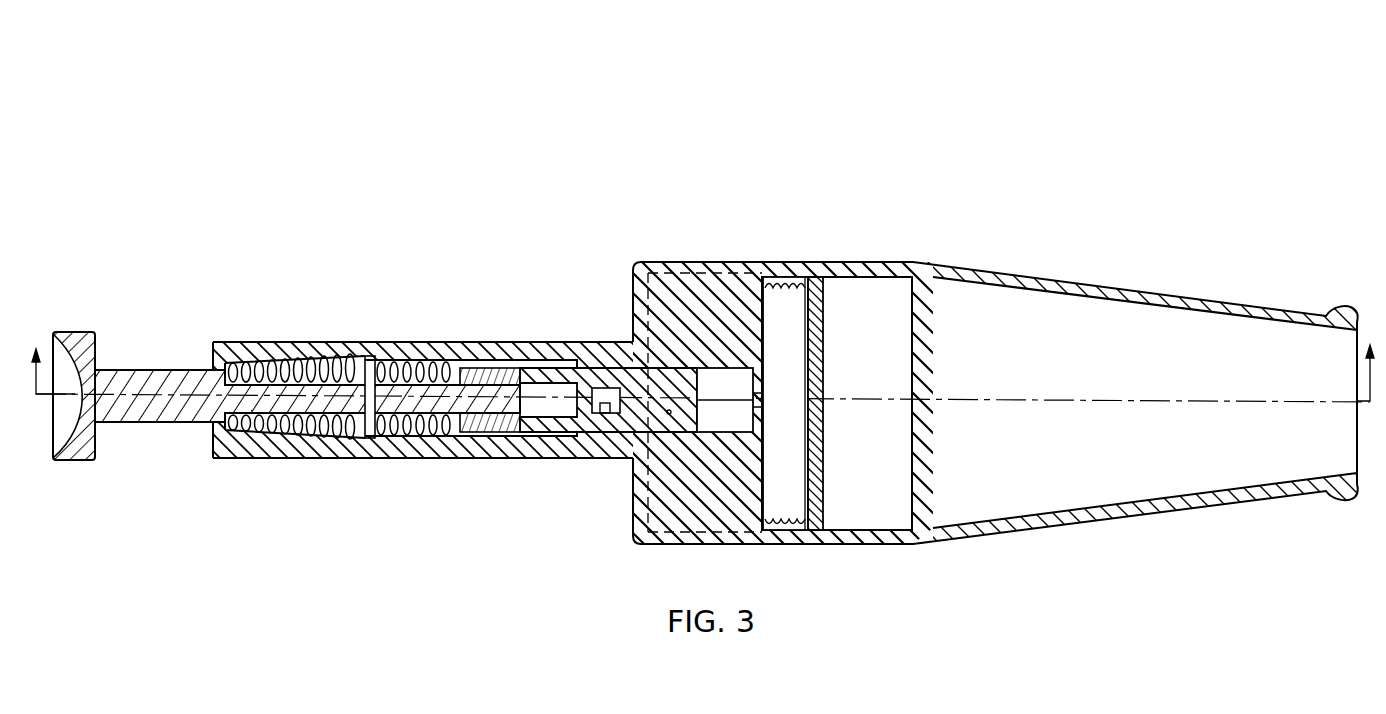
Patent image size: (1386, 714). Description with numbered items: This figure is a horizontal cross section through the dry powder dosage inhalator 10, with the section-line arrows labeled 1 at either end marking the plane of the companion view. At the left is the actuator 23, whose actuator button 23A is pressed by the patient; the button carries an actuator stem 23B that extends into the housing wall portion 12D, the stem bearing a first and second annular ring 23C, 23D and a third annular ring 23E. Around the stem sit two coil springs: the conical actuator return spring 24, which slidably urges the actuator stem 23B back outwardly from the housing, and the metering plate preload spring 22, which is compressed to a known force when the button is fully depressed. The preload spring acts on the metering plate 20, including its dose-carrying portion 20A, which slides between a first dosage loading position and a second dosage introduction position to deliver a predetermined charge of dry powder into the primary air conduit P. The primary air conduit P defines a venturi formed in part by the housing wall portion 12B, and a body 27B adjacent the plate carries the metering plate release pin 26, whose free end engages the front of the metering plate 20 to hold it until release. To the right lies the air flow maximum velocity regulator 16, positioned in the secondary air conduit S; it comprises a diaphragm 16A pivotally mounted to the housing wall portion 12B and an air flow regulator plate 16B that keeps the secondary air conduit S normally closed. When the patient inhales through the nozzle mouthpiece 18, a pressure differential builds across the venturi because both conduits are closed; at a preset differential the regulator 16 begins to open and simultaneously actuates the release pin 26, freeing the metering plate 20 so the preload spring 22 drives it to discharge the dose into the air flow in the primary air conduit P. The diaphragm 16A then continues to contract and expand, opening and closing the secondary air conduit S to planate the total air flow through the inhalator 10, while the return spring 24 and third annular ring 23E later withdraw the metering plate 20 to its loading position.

The inhalator 10 is at (1094, 71).
The section line 1 is at (703, 360).
The actuator 23 is at (157, 288).
The actuator button 23A is at (77, 461).
The actuator stem 23B is at (166, 423).
The shoulder 23C is at (235, 372).
The washer 23D is at (352, 368).
The third annular ring 23E is at (530, 380).
The housing barrel 12D is at (346, 352).
The actuator return spring 24 is at (315, 437).
The metering plate preload spring 22 is at (450, 426).
The metering plate 20 is at (545, 434).
The piston port 20A is at (602, 414).
The housing wall portion 12B is at (722, 499).
The primary air conduit P is at (668, 415).
The valve seat 27B is at (725, 400).
The metering plate release pin 26 is at (787, 410).
The air flow maximum velocity regulator 16 is at (839, 294).
The diaphragm 16A is at (783, 285).
The air flow regulator plate 16B is at (823, 348).
The secondary air conduit S is at (876, 389).
The nozzle mouthpiece 18 is at (1332, 311).